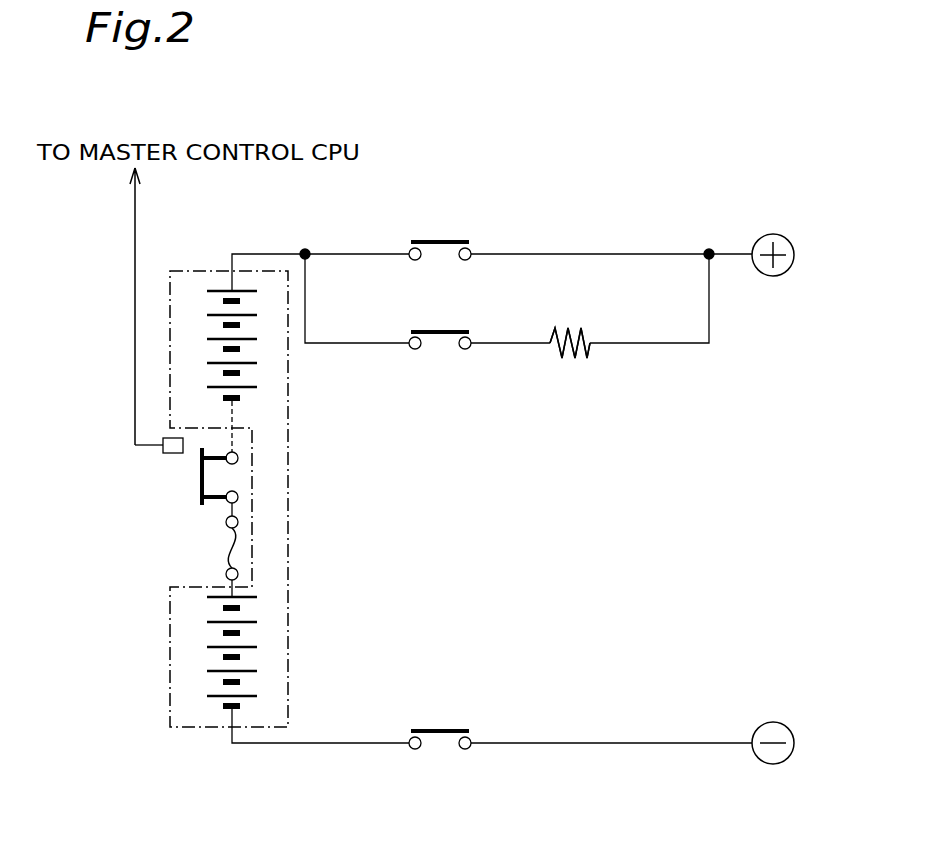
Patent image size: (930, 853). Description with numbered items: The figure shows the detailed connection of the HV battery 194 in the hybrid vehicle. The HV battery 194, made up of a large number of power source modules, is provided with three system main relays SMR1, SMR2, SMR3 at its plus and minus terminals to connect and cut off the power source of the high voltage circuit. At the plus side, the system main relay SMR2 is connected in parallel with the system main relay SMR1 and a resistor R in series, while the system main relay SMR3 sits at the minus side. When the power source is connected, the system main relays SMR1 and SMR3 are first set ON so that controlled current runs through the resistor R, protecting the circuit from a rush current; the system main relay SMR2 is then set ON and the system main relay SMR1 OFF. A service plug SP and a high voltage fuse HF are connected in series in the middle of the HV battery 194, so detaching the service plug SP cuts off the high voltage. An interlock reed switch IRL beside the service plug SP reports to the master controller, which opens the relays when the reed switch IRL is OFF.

The system main relay SMR2 is at (441, 268).
The system main relay SMR1 is at (441, 358).
The system main relay SMR3 is at (440, 729).
The resistor R is at (585, 333).
The HV battery 194 is at (289, 503).
The interlock reed switch IRL is at (173, 453).
The service plug SP is at (201, 482).
The high voltage fuse HF is at (226, 548).